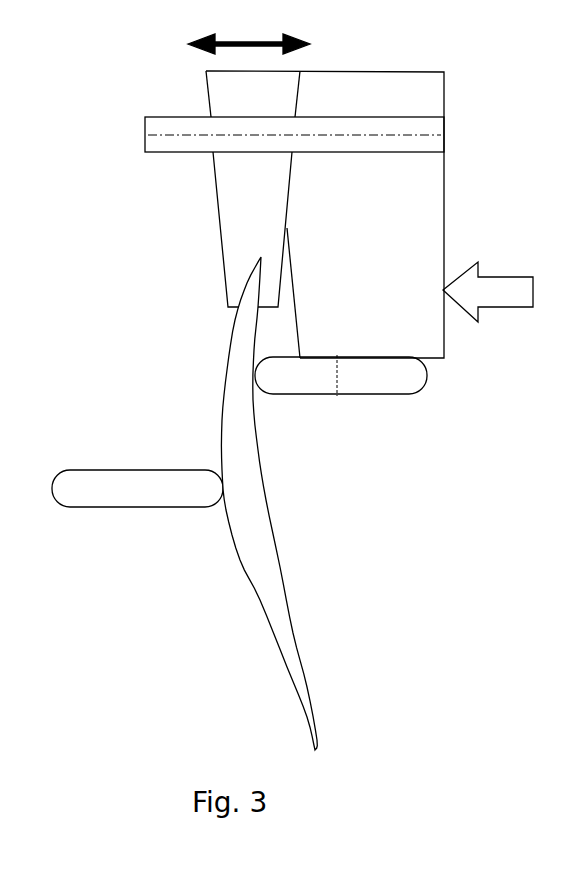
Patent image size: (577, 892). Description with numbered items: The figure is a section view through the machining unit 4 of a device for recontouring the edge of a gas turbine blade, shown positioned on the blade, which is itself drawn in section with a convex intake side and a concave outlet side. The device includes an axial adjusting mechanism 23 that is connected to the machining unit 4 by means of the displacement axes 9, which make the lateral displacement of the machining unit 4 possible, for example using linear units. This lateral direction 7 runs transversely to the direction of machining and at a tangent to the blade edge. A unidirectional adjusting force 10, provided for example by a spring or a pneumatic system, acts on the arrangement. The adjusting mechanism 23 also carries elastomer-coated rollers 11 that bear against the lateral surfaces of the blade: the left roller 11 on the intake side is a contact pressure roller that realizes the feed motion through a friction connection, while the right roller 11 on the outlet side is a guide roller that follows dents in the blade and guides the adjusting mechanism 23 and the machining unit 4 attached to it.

The machining unit 4 is at (230, 187).
The lateral direction 7 is at (267, 45).
The displacement axes 9 is at (400, 142).
The unidirectional adjusting force 10 is at (500, 290).
The roller 11 is at (145, 483).
The axial adjusting mechanism 23 is at (382, 91).